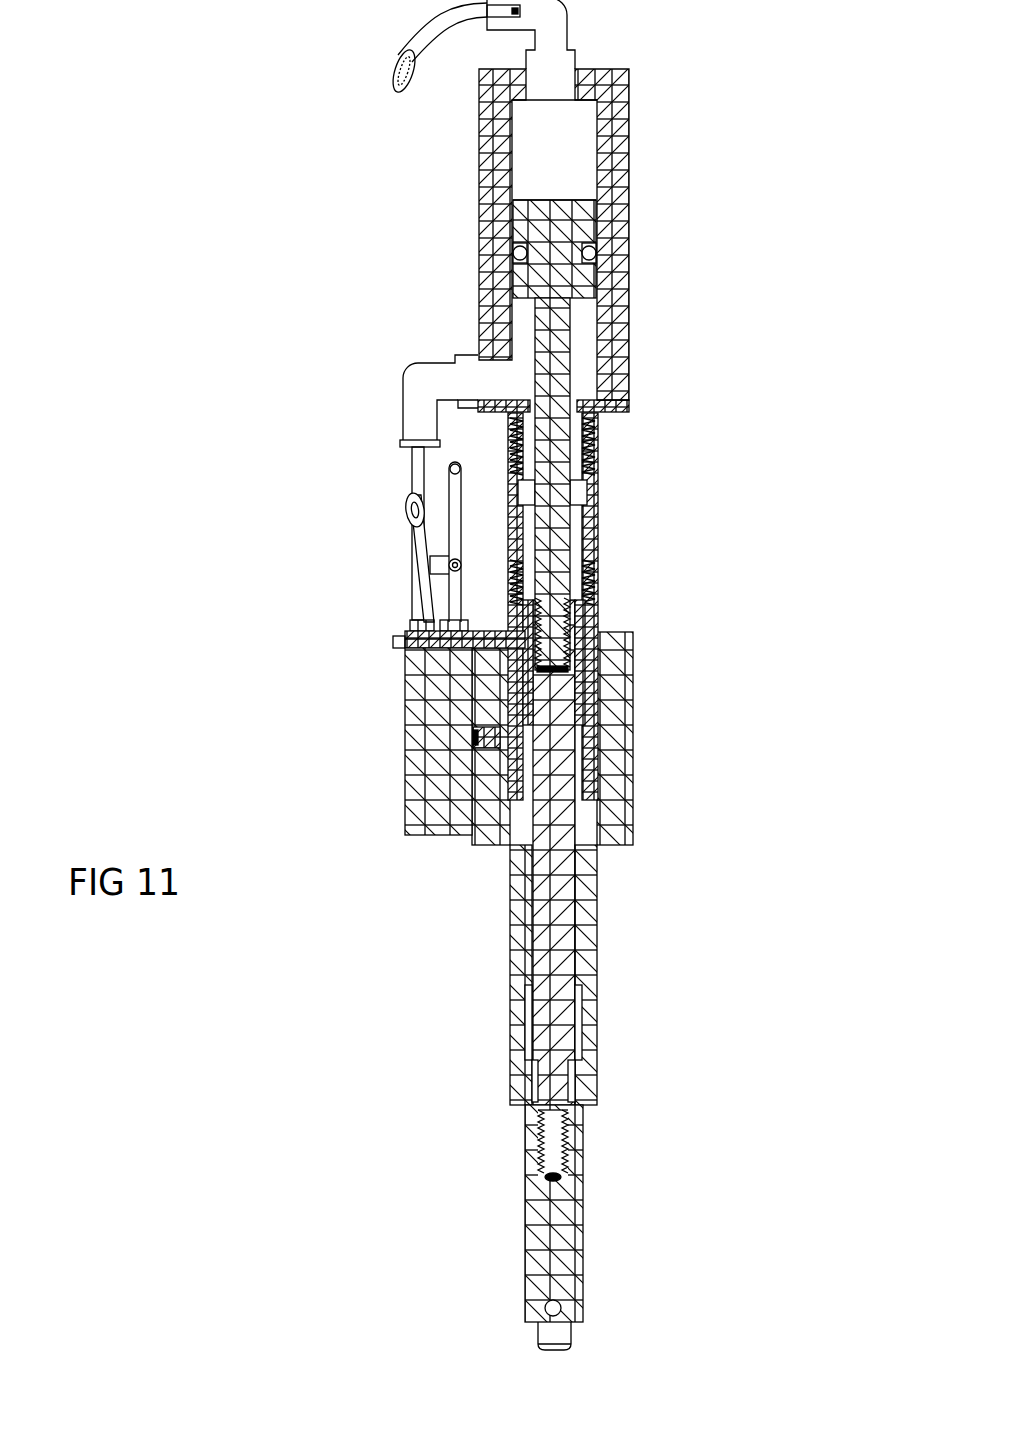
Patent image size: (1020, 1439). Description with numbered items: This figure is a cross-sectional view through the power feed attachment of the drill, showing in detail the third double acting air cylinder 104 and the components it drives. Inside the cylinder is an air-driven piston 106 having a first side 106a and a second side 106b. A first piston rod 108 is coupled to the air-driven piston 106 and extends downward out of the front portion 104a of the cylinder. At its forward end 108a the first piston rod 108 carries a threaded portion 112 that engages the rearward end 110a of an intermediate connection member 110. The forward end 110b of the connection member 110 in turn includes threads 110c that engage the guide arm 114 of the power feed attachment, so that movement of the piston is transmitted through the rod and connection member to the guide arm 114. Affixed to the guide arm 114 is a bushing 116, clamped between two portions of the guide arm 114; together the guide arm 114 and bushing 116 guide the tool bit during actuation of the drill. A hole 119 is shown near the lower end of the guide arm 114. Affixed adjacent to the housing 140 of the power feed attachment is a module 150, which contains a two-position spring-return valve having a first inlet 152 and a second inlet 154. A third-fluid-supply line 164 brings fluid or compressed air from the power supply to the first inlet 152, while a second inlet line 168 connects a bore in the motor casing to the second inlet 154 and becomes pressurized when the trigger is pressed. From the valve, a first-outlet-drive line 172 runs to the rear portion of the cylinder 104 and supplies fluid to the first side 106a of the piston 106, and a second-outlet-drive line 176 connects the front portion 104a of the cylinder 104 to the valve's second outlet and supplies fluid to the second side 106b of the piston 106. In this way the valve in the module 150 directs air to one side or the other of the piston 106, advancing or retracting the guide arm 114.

The third double acting air cylinder 104 is at (612, 118).
The front portion of double acting air cylinder 104a is at (597, 450).
The air-driven piston 106 is at (513, 216).
The first side of air-driven piston 106a is at (562, 200).
The second side of air-driven piston 106b is at (612, 318).
The first piston rod 108 is at (553, 548).
The forward end of first piston rod 108a is at (567, 604).
The connection member 110 is at (557, 955).
The rearward end of connection member 110a is at (572, 618).
The forward end of connection member 110b is at (550, 1090).
The threads 110c is at (547, 1147).
The threaded portion 112 is at (547, 628).
The guide arm 114 is at (550, 1227).
The bushing 116 is at (547, 1333).
The pin hole 119 is at (553, 1308).
The housing 140 is at (520, 950).
The module 150 is at (427, 685).
The first inlet 152 is at (397, 630).
The second inlet 154 is at (473, 623).
The third-fluid-supply line 164 is at (415, 605).
The second inlet line 168 is at (417, 537).
The first-outlet-drive line 172 is at (420, 26).
The second-outlet-drive line 176 is at (412, 465).